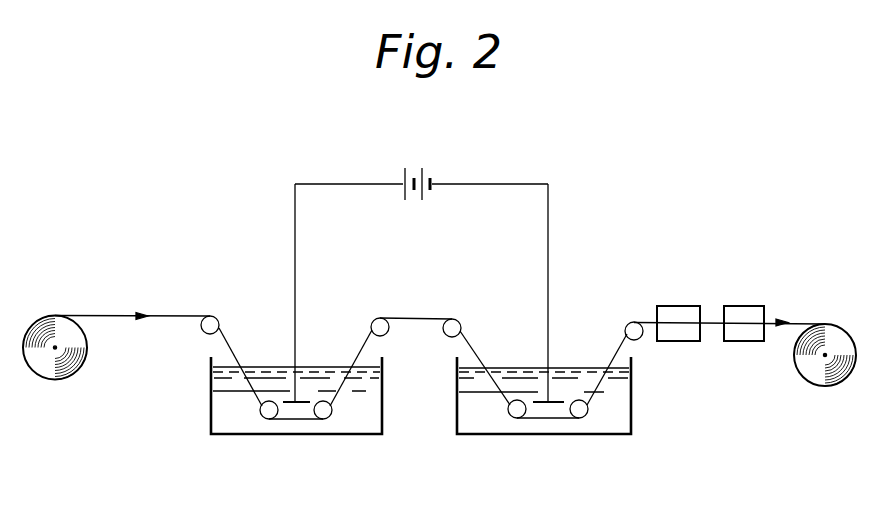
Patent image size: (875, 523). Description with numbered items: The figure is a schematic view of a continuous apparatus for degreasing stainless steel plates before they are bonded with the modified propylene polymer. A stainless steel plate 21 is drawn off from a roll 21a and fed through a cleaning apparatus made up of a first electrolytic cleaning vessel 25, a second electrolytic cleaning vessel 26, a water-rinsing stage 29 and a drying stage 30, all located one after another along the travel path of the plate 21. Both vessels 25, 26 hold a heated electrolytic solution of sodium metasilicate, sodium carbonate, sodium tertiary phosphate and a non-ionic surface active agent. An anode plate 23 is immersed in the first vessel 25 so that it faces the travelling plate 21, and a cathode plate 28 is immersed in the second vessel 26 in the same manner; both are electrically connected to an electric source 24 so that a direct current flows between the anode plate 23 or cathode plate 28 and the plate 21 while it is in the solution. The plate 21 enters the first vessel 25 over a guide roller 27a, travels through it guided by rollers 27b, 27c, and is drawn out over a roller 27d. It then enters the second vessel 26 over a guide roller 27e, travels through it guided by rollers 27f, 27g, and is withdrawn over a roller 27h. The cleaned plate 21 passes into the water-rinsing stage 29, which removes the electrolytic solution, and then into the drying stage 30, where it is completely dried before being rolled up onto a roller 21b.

The stainless steel plate 21 is at (107, 318).
The roll 21a is at (50, 379).
The roller 21b is at (822, 386).
The anode plate 23 is at (305, 400).
The electric source 24 is at (415, 162).
The first electrolytic cleaning vessel 25 is at (233, 436).
The second electrolytic cleaning vessel 26 is at (490, 436).
The guide roller 27a is at (204, 331).
The roller 27b is at (269, 420).
The roller 27c is at (323, 420).
The roller 27d is at (386, 334).
The guide roller 27e is at (450, 319).
The roller 27f is at (517, 419).
The roller 27g is at (582, 418).
The roller 27h is at (638, 340).
The cathode plate 28 is at (563, 398).
The water-rinsing stage 29 is at (688, 342).
The drying stage 30 is at (744, 342).